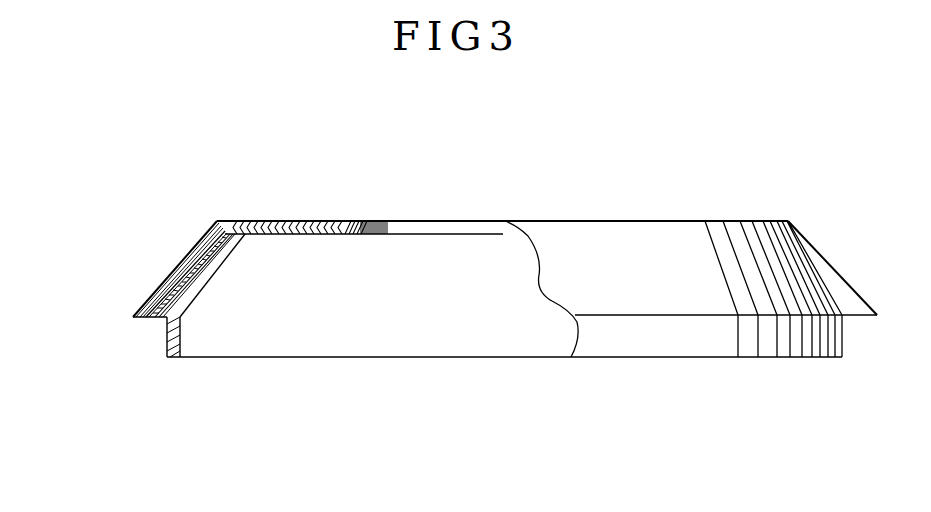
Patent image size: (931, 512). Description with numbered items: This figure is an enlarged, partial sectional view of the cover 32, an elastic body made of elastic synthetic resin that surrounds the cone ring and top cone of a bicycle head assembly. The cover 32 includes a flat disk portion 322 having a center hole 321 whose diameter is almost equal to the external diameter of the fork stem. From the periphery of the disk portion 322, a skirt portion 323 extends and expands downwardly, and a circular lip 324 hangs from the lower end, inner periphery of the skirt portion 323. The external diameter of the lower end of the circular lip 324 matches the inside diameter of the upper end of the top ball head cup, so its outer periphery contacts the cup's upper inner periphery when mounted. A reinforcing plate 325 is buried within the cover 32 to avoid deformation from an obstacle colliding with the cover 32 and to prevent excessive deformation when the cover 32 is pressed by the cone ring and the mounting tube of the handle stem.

The cover 32 is at (691, 205).
The center hole 321 is at (447, 220).
The disk portion 322 is at (273, 218).
The skirt portion 323 is at (173, 280).
The circular lip 324 is at (182, 357).
The reinforcing plate 325 is at (207, 247).